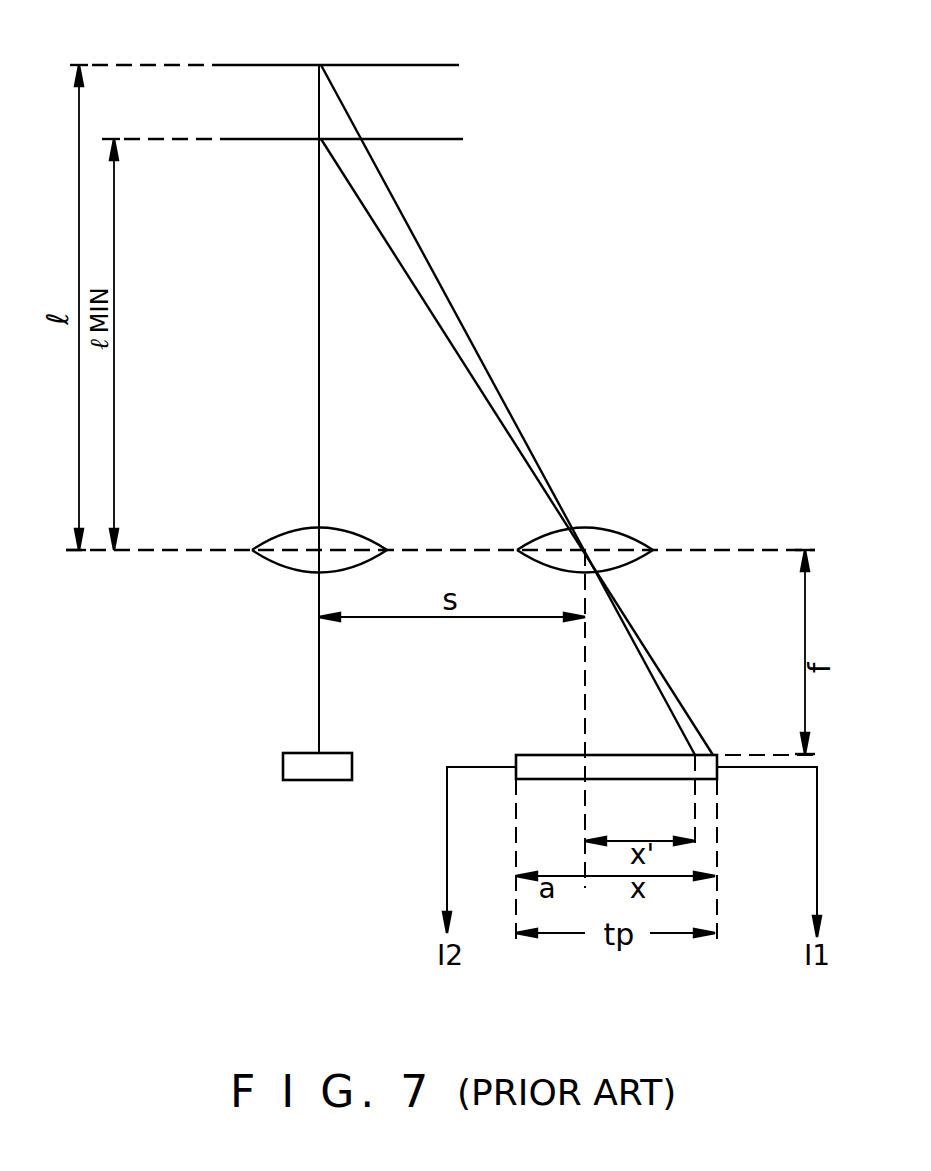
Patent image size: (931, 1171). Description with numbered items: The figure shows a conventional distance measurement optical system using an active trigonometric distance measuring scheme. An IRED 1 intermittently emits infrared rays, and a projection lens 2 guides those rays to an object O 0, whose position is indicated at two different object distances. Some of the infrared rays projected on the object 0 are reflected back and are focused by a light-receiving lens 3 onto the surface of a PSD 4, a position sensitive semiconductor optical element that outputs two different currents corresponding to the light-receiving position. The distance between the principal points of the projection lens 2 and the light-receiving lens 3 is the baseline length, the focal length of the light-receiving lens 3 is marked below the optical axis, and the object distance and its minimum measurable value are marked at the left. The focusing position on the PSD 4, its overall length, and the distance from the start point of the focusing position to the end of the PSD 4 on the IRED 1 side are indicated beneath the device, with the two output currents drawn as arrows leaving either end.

The object 0 is at (455, 65).
The IRED 1 is at (292, 760).
The projection lens 2 is at (356, 536).
The light-receiving lens 3 is at (634, 536).
The PSD 4 is at (542, 764).